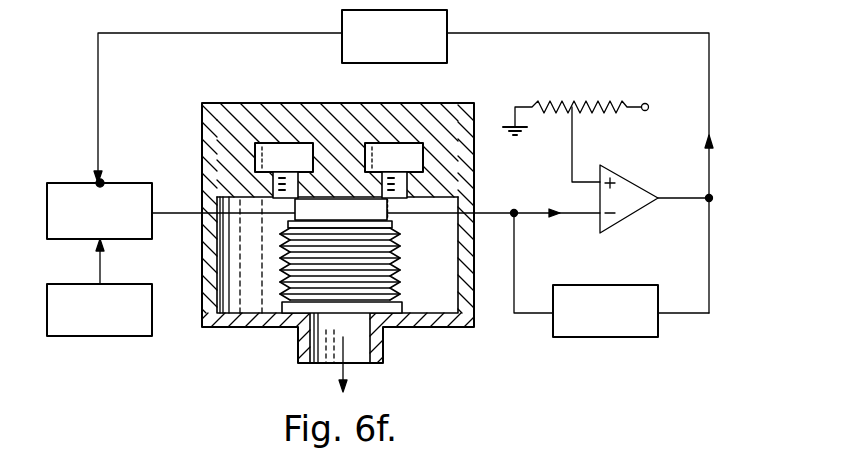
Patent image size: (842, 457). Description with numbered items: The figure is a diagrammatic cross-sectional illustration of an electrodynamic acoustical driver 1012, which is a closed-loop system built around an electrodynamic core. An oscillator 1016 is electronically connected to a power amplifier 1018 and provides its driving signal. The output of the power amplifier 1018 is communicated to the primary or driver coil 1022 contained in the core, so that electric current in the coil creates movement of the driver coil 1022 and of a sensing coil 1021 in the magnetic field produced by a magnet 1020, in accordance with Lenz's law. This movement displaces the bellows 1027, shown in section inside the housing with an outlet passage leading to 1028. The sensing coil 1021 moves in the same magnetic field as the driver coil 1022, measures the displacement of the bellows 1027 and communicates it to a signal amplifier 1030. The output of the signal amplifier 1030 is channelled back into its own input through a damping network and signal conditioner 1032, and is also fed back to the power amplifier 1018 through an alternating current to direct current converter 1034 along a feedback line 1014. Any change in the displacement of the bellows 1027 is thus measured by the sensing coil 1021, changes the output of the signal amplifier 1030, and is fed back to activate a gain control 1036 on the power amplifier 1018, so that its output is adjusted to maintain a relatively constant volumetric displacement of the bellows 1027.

The electrodynamic acoustical driver 1012 is at (167, 102).
The feedback line 1014 is at (731, 112).
The oscillator 1016 is at (76, 322).
The power amplifier 1018 is at (76, 226).
The magnet 1020 is at (288, 117).
The sensing coil 1021 is at (480, 295).
The driver coil 1022 is at (388, 204).
The bellows 1027 is at (282, 278).
The outlet 1028 is at (345, 350).
The signal amplifier 1030 is at (633, 187).
The damping network and signal conditioner 1032 is at (582, 323).
The alternating current to direct current converter 1034 is at (371, 47).
The gain control 1036 is at (97, 179).